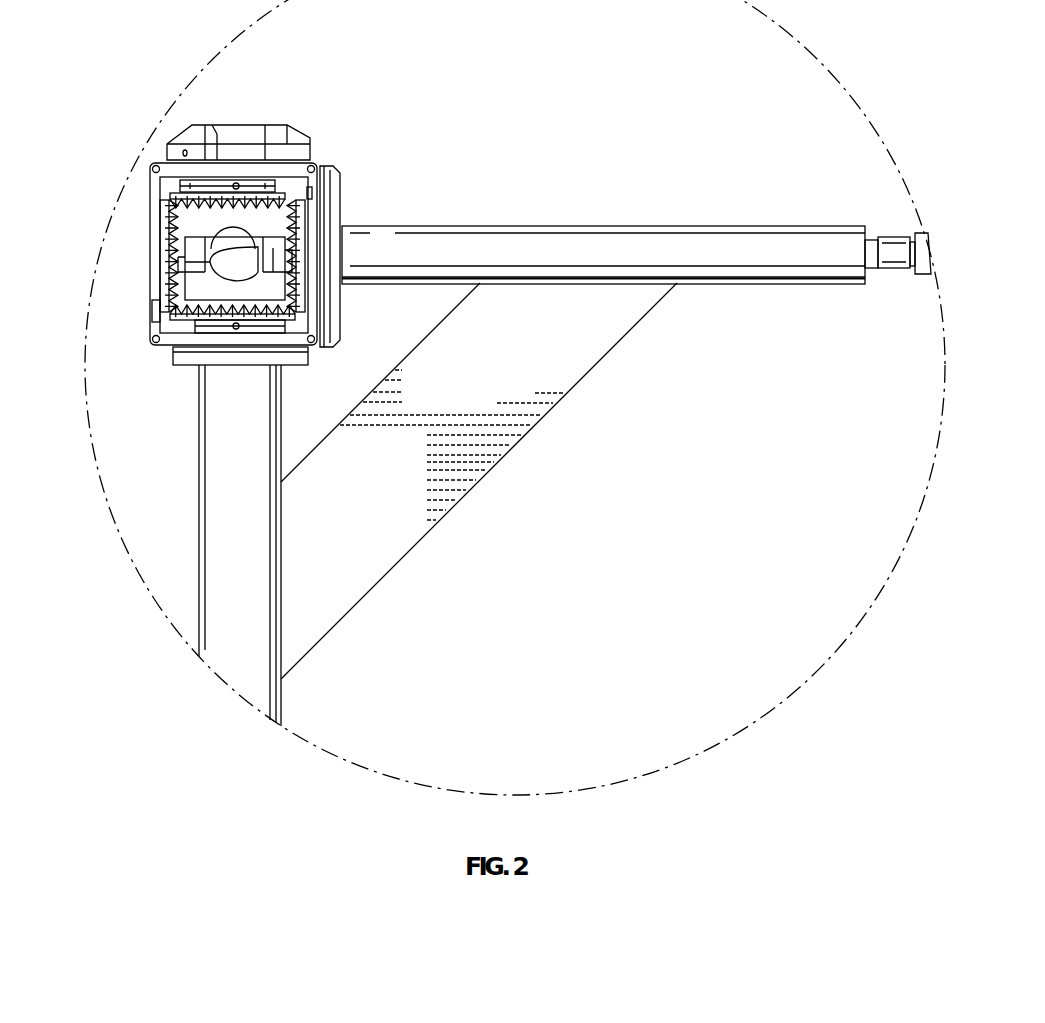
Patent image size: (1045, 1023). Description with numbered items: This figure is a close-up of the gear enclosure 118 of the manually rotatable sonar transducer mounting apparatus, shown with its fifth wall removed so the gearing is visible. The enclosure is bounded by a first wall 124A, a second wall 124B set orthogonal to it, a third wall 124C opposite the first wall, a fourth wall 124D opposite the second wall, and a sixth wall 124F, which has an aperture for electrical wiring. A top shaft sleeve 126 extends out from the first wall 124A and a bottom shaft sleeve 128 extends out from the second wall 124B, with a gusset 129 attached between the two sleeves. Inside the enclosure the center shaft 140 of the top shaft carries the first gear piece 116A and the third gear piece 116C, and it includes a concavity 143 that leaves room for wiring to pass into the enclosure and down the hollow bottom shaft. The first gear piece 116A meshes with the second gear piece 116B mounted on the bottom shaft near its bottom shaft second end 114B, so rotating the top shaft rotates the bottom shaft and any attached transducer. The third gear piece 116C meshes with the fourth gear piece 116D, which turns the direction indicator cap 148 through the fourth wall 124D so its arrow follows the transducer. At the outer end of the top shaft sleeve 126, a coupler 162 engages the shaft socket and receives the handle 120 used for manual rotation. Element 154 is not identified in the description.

The bottom shaft second end 114B is at (232, 333).
The first gear piece 116A is at (300, 245).
The second gear piece 116B is at (192, 323).
The third gear piece 116C is at (167, 233).
The fourth gear piece 116D is at (207, 247).
The gear enclosure 118 is at (168, 206).
The handle 120 is at (925, 275).
The first wall 124A is at (318, 293).
The second wall 124B is at (277, 342).
The third wall 124C is at (143, 314).
The fourth wall 124D is at (229, 168).
The sixth wall 124F is at (260, 223).
The top shaft sleeve 126 is at (593, 250).
The bottom shaft sleeve 128 is at (222, 518).
The gusset 129 is at (598, 332).
The center shaft 140 is at (165, 198).
The concavity 143 is at (270, 245).
The direction indicator cap 148 is at (247, 133).
The central block 154 is at (207, 264).
The coupler 162 is at (893, 237).